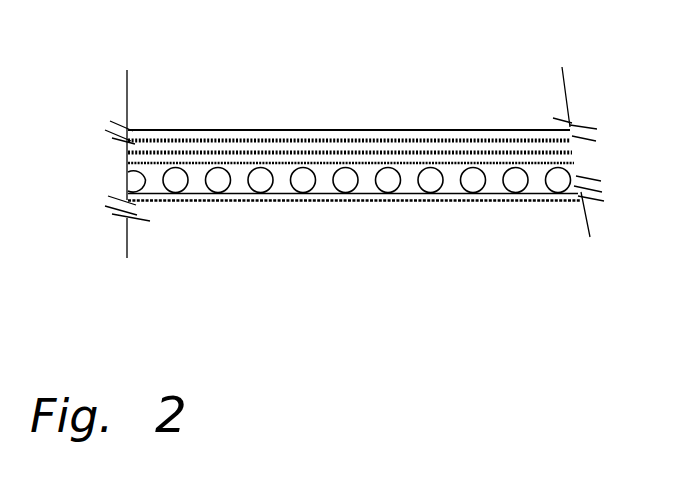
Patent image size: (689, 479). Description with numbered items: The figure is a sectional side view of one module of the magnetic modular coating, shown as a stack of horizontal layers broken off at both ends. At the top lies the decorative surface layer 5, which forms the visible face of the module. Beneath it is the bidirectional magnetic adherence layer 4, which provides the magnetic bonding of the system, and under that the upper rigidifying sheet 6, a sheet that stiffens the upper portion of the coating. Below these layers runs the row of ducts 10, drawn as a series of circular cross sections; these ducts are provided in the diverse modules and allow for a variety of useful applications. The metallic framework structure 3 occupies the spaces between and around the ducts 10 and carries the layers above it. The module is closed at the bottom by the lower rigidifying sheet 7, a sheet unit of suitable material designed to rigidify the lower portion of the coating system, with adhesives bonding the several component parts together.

The structure 3 is at (195, 182).
The adherence layer 4 is at (242, 149).
The decorative surface layer 5 is at (173, 132).
The upper rigidifying sheet 6 is at (320, 162).
The lower rigidifying sheet 7 is at (540, 197).
The duct 10 is at (346, 180).